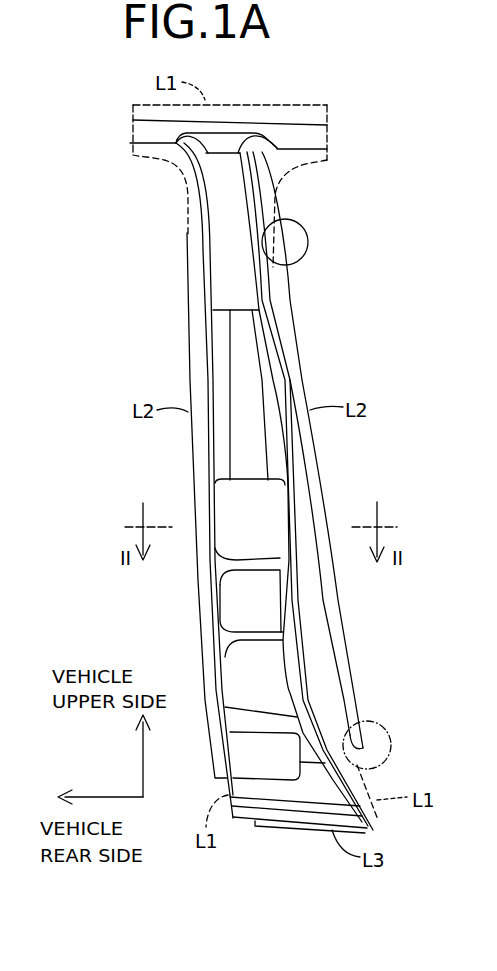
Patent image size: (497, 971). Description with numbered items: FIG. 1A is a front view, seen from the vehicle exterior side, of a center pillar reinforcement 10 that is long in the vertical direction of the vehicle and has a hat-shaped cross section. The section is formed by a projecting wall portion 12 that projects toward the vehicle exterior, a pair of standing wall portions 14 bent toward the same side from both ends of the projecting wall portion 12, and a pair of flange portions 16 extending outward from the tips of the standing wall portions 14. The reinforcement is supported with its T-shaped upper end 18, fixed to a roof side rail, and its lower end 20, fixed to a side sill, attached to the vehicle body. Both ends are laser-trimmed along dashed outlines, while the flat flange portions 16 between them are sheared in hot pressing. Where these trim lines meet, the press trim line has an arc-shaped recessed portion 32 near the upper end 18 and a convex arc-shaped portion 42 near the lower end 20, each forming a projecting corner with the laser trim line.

The center pillar reinforcement 10 is at (378, 219).
The projecting wall portion 12 is at (243, 362).
The standing wall portions 14 is at (210, 620).
The flange portions 16 is at (287, 333).
The upper end 18 is at (270, 96).
The lower end 20 is at (268, 853).
The recessed portion 32 is at (280, 240).
The convex arc-shaped portion 42 is at (220, 780).